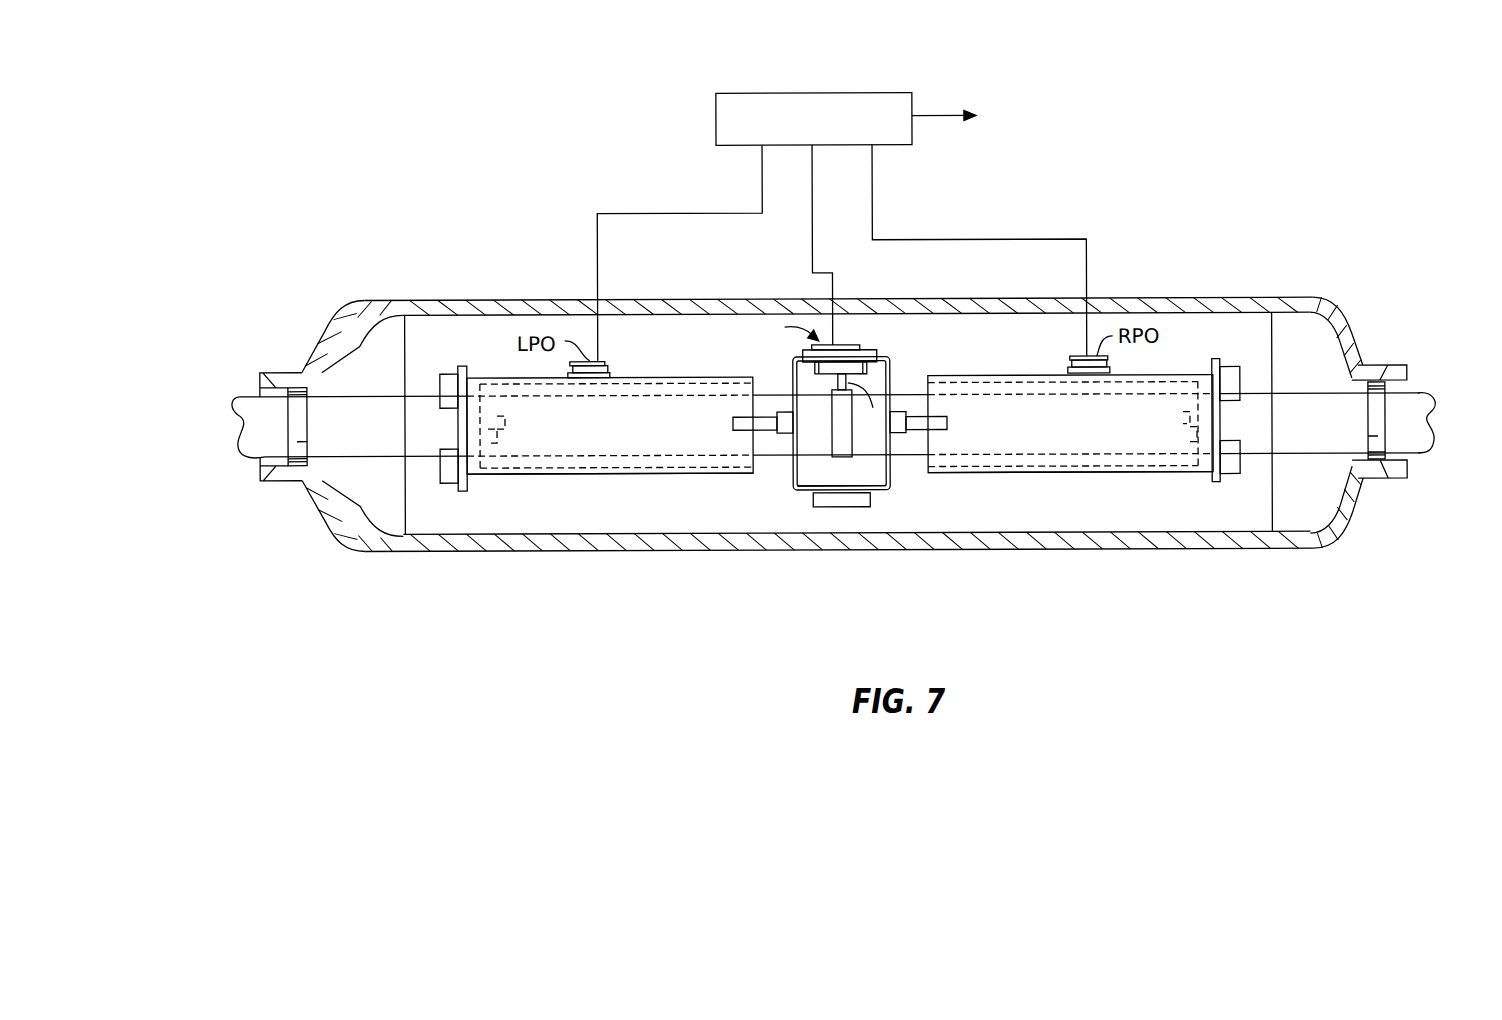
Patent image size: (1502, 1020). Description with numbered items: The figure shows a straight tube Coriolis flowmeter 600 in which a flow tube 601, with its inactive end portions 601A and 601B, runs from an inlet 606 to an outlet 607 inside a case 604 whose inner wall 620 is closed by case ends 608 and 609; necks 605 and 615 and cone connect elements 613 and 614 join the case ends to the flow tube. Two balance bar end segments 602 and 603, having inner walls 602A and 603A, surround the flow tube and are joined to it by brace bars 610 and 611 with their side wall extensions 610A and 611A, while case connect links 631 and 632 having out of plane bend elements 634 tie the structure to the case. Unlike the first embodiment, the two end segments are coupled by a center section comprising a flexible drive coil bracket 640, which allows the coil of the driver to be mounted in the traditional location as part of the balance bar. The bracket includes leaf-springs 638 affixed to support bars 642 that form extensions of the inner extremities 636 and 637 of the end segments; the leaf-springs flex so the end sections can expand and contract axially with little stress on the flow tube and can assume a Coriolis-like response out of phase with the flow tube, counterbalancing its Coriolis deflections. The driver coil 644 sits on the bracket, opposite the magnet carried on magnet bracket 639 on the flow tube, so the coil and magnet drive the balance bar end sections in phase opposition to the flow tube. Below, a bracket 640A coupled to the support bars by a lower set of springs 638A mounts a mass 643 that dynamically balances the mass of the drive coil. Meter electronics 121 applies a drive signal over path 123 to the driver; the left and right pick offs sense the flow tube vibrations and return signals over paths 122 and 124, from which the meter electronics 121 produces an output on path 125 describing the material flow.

The meter electronics 121 is at (717, 100).
The path 122 is at (763, 170).
The path 123 is at (813, 180).
The path 124 is at (873, 168).
The path 125 is at (945, 112).
The Coriolis flowmeter 600 is at (373, 195).
The flow tube 601 is at (910, 457).
The inactive end portion 601A is at (369, 441).
The inactive end portion 601B is at (1307, 432).
The balance bar end segment 602 is at (648, 410).
The inner wall 602A is at (554, 471).
The balance bar end segment 603 is at (1033, 400).
The inner wall 603A is at (1126, 464).
The case 604 is at (700, 298).
The neck 605 is at (268, 484).
The inlet 606 is at (242, 437).
The outlet 607 is at (1445, 435).
The case end 608 is at (325, 325).
The case end 609 is at (1352, 332).
The brace bar 610 is at (492, 447).
The side wall extension 610A is at (500, 424).
The brace bar 611 is at (1192, 444).
The side wall extension 611A is at (1180, 418).
The cone connect element 613 is at (300, 412).
The cone connect element 614 is at (1380, 398).
The neck 615 is at (1380, 481).
The inner wall 620 is at (636, 534).
The case connect link 631 is at (458, 366).
The case connect link 632 is at (1226, 358).
The out of plane bend element 634 is at (448, 492).
The inner extremity 636 is at (753, 452).
The inner extremity 637 is at (928, 402).
The leaf-spring 638 is at (790, 378).
The lower set of springs 638A is at (793, 472).
The magnet bracket 639 is at (839, 443).
The drive coil bracket 640 is at (840, 396).
The bracket 640A is at (856, 522).
The support bar 642 is at (737, 428).
The mass 643 is at (866, 498).
The driver coil 644 is at (855, 368).